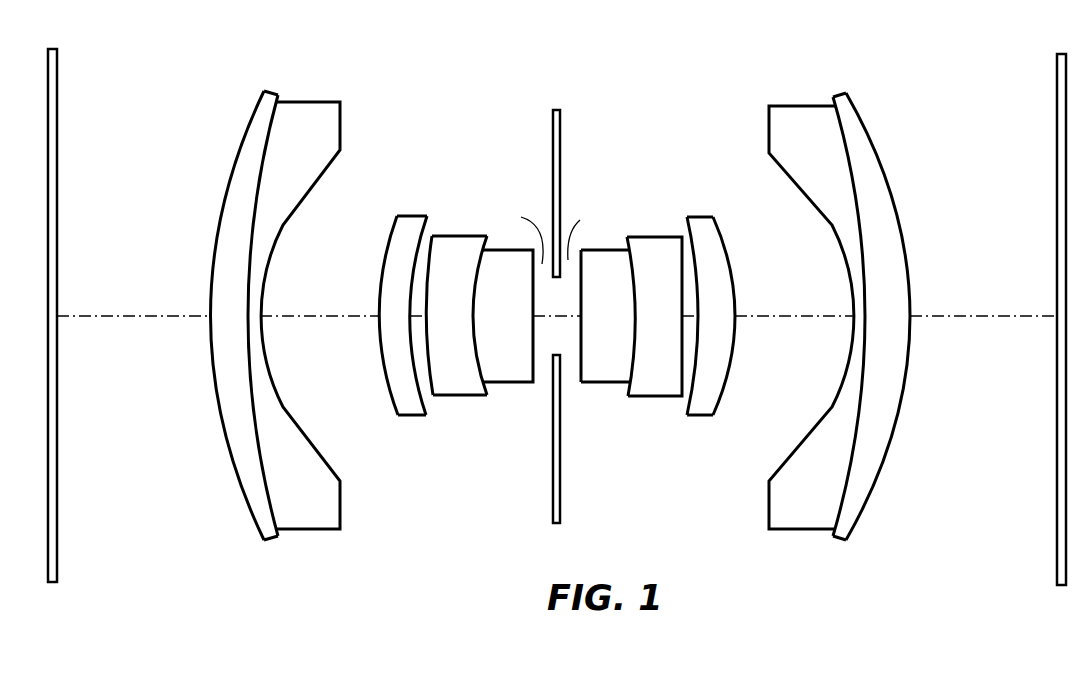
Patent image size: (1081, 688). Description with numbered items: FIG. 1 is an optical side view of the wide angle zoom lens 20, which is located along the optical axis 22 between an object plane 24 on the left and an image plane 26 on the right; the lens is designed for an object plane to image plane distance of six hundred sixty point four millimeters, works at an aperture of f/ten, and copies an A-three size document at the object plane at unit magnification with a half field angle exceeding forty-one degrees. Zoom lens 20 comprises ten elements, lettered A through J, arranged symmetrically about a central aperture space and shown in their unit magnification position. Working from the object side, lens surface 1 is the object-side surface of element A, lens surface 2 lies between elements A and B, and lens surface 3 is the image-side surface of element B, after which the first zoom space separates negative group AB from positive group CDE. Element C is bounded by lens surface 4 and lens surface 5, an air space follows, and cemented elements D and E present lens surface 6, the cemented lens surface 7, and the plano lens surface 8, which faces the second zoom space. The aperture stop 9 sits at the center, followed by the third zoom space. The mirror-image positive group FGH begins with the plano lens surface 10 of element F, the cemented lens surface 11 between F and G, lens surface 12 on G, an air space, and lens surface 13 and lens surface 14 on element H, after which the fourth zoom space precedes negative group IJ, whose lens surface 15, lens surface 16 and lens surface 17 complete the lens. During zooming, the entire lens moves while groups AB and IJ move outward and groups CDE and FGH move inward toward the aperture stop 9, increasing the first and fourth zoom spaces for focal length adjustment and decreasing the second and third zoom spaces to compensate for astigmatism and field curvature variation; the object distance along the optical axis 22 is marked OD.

The lens surface 1 is at (236, 157).
The lens surface 2 is at (253, 208).
The lens surface 3 is at (281, 225).
The lens surface 4 is at (383, 270).
The lens surface 5 is at (418, 243).
The lens surface 6 is at (432, 250).
The lens surface 7 is at (474, 292).
The lens surface 8 is at (533, 293).
The aperture stop 9 is at (552, 410).
The lens surface 10 is at (582, 303).
The lens surface 11 is at (634, 308).
The lens surface 12 is at (682, 300).
The lens surface 13 is at (687, 222).
The lens surface 14 is at (727, 253).
The lens surface 15 is at (830, 412).
The lens surface 16 is at (852, 180).
The lens surface 17 is at (891, 192).
The zoom lens 20 is at (653, 73).
The optical axis 22 is at (932, 317).
The object plane 24 is at (58, 73).
The image plane 26 is at (1057, 537).